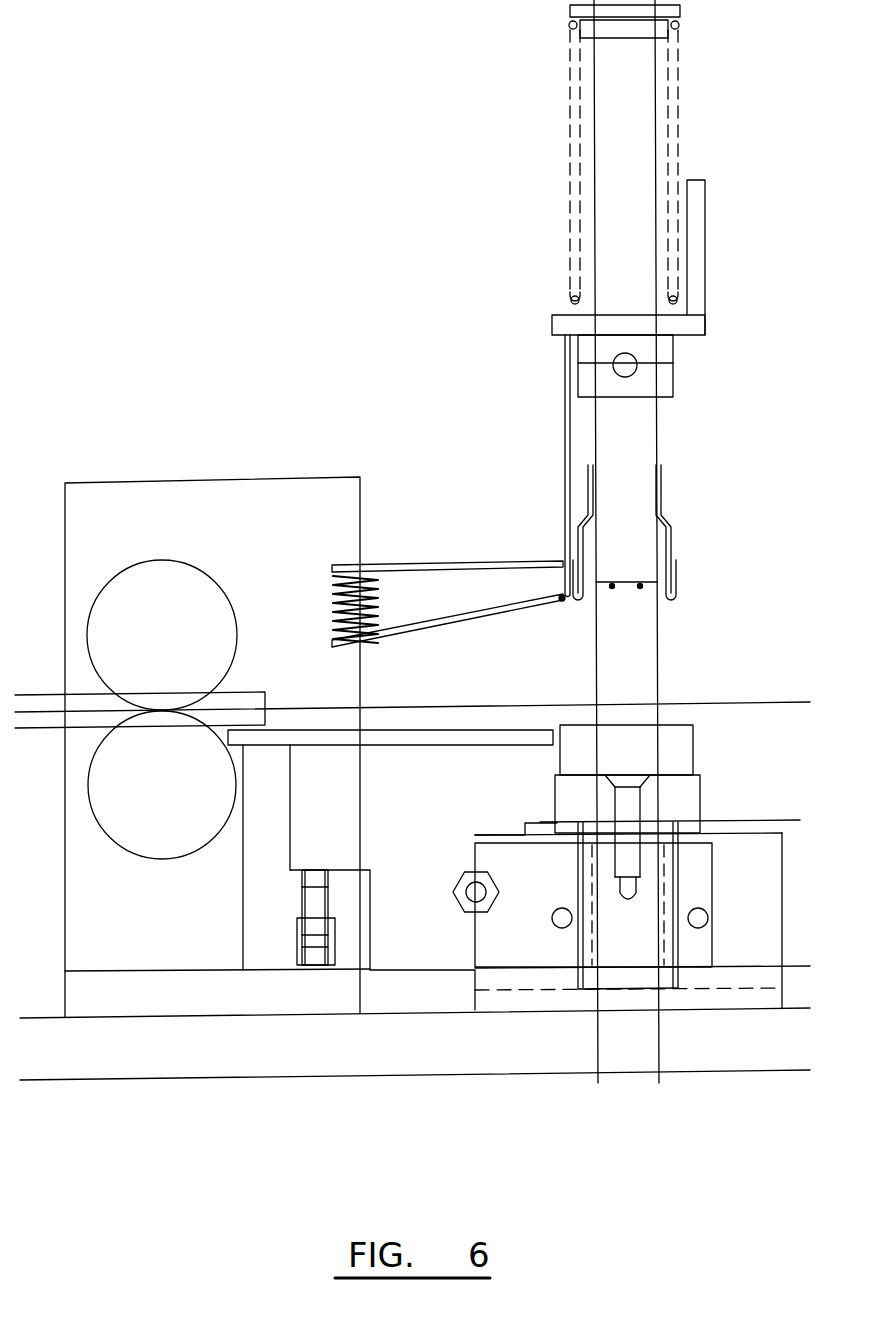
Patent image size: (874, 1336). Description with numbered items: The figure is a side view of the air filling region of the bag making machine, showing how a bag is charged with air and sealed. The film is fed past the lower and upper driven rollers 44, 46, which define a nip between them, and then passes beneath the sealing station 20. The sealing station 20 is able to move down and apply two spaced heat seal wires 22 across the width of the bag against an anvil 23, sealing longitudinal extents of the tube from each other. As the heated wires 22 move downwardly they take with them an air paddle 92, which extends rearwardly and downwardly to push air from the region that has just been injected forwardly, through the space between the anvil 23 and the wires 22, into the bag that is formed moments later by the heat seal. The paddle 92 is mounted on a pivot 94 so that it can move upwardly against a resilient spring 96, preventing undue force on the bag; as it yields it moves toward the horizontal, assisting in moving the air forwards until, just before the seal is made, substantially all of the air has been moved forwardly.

The sealing station 20 is at (694, 570).
The heat seal wires 22 is at (612, 586).
The anvil 23 is at (678, 747).
The lower driven roller 44 is at (177, 788).
The upper driven roller 46 is at (162, 613).
The air paddle 92 is at (448, 623).
The pivot 94 is at (565, 604).
The resilient spring 96 is at (377, 592).